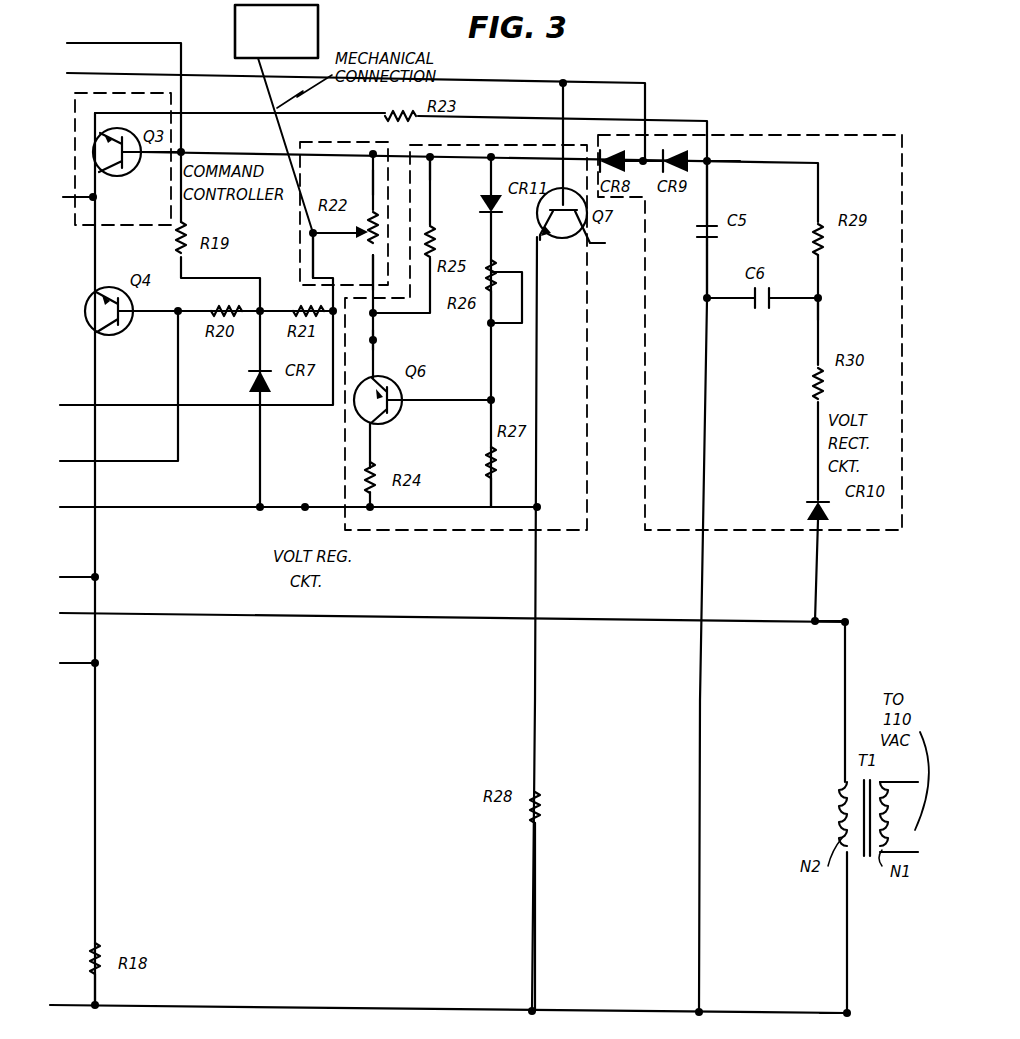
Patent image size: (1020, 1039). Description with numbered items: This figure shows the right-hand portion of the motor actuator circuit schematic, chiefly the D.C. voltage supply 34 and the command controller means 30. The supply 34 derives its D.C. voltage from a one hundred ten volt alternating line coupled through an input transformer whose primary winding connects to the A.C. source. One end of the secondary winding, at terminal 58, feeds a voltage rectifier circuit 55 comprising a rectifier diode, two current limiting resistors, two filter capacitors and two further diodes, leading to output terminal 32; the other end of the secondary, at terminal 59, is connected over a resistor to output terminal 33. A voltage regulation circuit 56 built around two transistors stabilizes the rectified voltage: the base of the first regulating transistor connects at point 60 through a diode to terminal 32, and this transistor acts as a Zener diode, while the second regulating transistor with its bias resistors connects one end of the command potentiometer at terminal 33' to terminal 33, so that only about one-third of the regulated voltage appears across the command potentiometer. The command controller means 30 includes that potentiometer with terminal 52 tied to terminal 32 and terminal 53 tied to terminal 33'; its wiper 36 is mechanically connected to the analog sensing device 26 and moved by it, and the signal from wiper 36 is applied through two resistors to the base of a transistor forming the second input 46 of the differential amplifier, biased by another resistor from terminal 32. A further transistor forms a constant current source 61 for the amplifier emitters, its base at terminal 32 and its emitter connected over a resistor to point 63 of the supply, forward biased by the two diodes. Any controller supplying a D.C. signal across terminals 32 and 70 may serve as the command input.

The analog sensing device 26 is at (318, 18).
The command controller means 30 is at (297, 213).
The output terminal 32 is at (430, 157).
The output terminal 33 is at (305, 493).
The terminal 33' is at (394, 341).
The D.C. voltage supply 34 is at (862, 61).
The wiper 36 is at (355, 243).
The second input 46 is at (150, 311).
The terminal 52 is at (373, 178).
The terminal 53 is at (373, 270).
The voltage rectifier circuit 55 is at (906, 402).
The voltage regulator circuit 56 is at (397, 538).
The terminal 58 is at (848, 620).
The terminal 59 is at (848, 1013).
The point 60 is at (645, 160).
The constant current source 61 is at (137, 229).
The point 63 is at (708, 160).
The terminal 70 is at (313, 256).